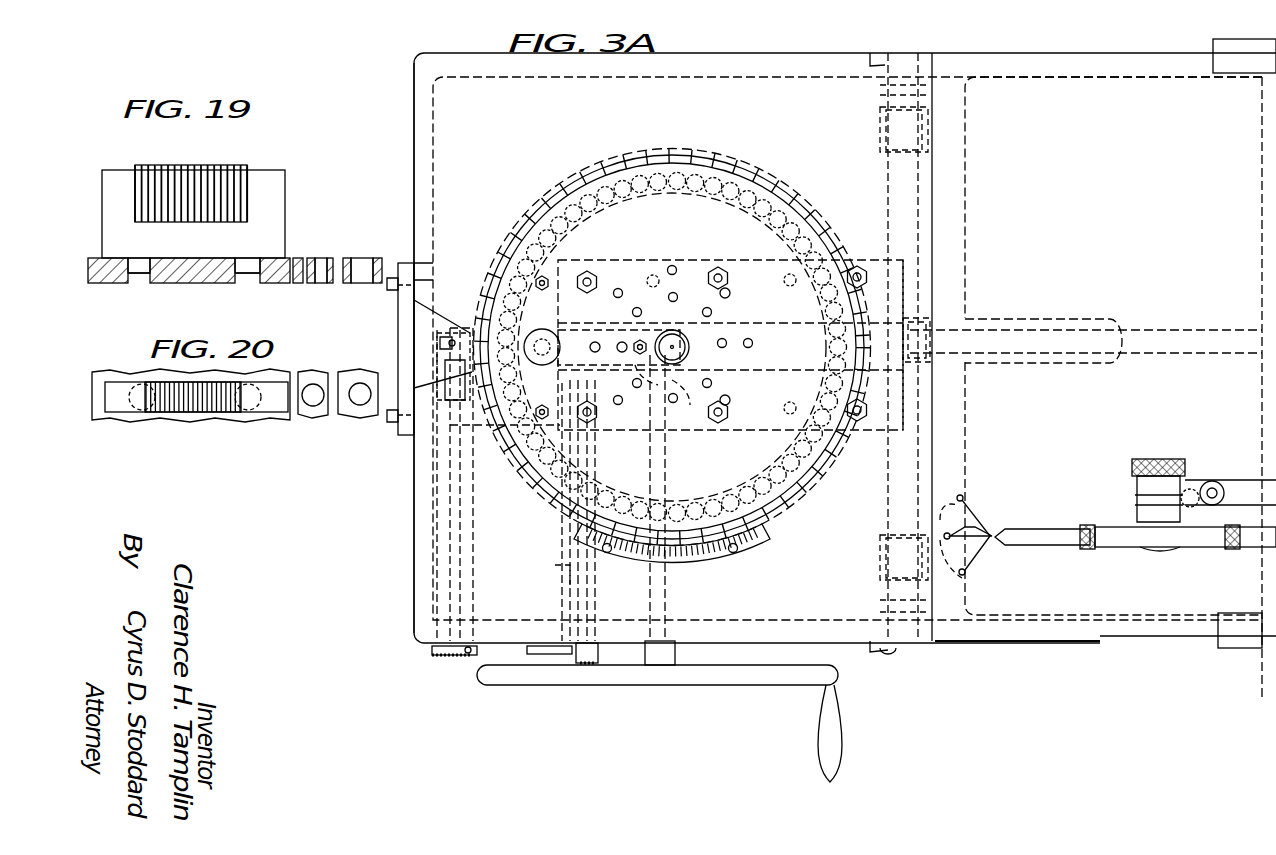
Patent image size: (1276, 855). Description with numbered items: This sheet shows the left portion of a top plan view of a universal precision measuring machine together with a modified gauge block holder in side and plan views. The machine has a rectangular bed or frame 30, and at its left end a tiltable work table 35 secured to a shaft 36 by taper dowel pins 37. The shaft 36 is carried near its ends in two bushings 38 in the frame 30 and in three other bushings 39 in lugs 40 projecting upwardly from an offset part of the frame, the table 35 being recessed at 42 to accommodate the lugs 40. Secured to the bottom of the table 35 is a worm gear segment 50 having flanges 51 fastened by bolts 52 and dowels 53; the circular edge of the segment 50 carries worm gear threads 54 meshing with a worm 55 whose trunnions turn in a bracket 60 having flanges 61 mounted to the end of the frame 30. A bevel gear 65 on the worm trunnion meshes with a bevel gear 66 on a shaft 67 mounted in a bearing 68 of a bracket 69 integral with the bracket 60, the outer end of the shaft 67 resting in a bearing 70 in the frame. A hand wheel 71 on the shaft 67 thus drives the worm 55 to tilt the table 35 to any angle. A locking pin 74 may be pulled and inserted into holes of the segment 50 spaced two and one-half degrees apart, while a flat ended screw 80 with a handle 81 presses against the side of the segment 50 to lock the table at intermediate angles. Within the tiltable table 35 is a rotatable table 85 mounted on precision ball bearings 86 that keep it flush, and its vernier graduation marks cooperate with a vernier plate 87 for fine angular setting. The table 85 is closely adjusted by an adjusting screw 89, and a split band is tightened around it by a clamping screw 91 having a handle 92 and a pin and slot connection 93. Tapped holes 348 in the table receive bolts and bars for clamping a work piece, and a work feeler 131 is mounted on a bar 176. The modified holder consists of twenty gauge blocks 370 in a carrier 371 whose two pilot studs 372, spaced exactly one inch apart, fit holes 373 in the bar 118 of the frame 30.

In FIG. 3A, the frame 30 is at (966, 244).
In FIG. 3A, the tiltable work table 35 is at (445, 128).
In FIG. 3A, the shaft 36 is at (890, 175).
In FIG. 3A, the taper dowel pins 37 is at (890, 88).
In FIG. 3A, the bushings 38 is at (868, 65).
In FIG. 3A, the bushings 39 is at (880, 128).
In FIG. 3A, the lugs 40 is at (930, 128).
In FIG. 3A, the recess 42 is at (930, 152).
In FIG. 3A, the worm gear segment 50 is at (802, 368).
In FIG. 3A, the flanges 51 is at (868, 262).
In FIG. 3A, the bolts 52 is at (585, 271).
In FIG. 3A, the dowels 53 is at (650, 274).
In FIG. 3A, the worm gear threads 54 is at (1065, 312).
In FIG. 3A, the worm 55 is at (597, 330).
In FIG. 3A, the bracket 60 is at (450, 325).
In FIG. 3A, the flanges 61 is at (398, 312).
In FIG. 3A, the bevel gear 65 is at (655, 340).
In FIG. 3A, the bevel gear 66 is at (676, 368).
In FIG. 3A, the shaft 67 is at (655, 483).
In FIG. 3A, the bearing 68 is at (668, 428).
In FIG. 3A, the bracket 69 is at (612, 432).
In FIG. 3A, the bearing 70 is at (675, 628).
In FIG. 3A, the hand wheel 71 is at (765, 682).
In FIG. 3A, the locking pin 74 is at (595, 575).
In FIG. 3A, the flat ended screw 80 is at (562, 540).
In FIG. 3A, the handle 81 is at (545, 655).
In FIG. 3A, the rotatable table 85 is at (725, 178).
In FIG. 3A, the ball bearings 86 is at (812, 500).
In FIG. 3A, the vernier plate 87 is at (765, 548).
In FIG. 3A, the adjusting screw 89 is at (455, 505).
In FIG. 3A, the clamping screw 91 is at (465, 480).
In FIG. 3A, the handle 92 is at (477, 655).
In FIG. 3A, the pin and slot connection 93 is at (440, 382).
In FIG. 19, the bar 118 is at (96, 270).
In FIG. 20, the bar 118 is at (265, 416).
In FIG. 3A, the work feeler 131 is at (978, 528).
In FIG. 3A, the bar 176 is at (1250, 480).
In FIG. 3A, the tapped holes 348 is at (672, 266).
In FIG. 19, the gauge blocks 370 is at (185, 166).
In FIG. 20, the gauge blocks 370 is at (225, 400).
In FIG. 19, the carrier 371 is at (110, 182).
In FIG. 20, the carrier 371 is at (110, 400).
In FIG. 19, the pilot studs 372 is at (245, 265).
In FIG. 20, the pilot studs 372 is at (135, 405).
In FIG. 19, the holes 373 is at (240, 283).
In FIG. 20, the holes 373 is at (358, 406).